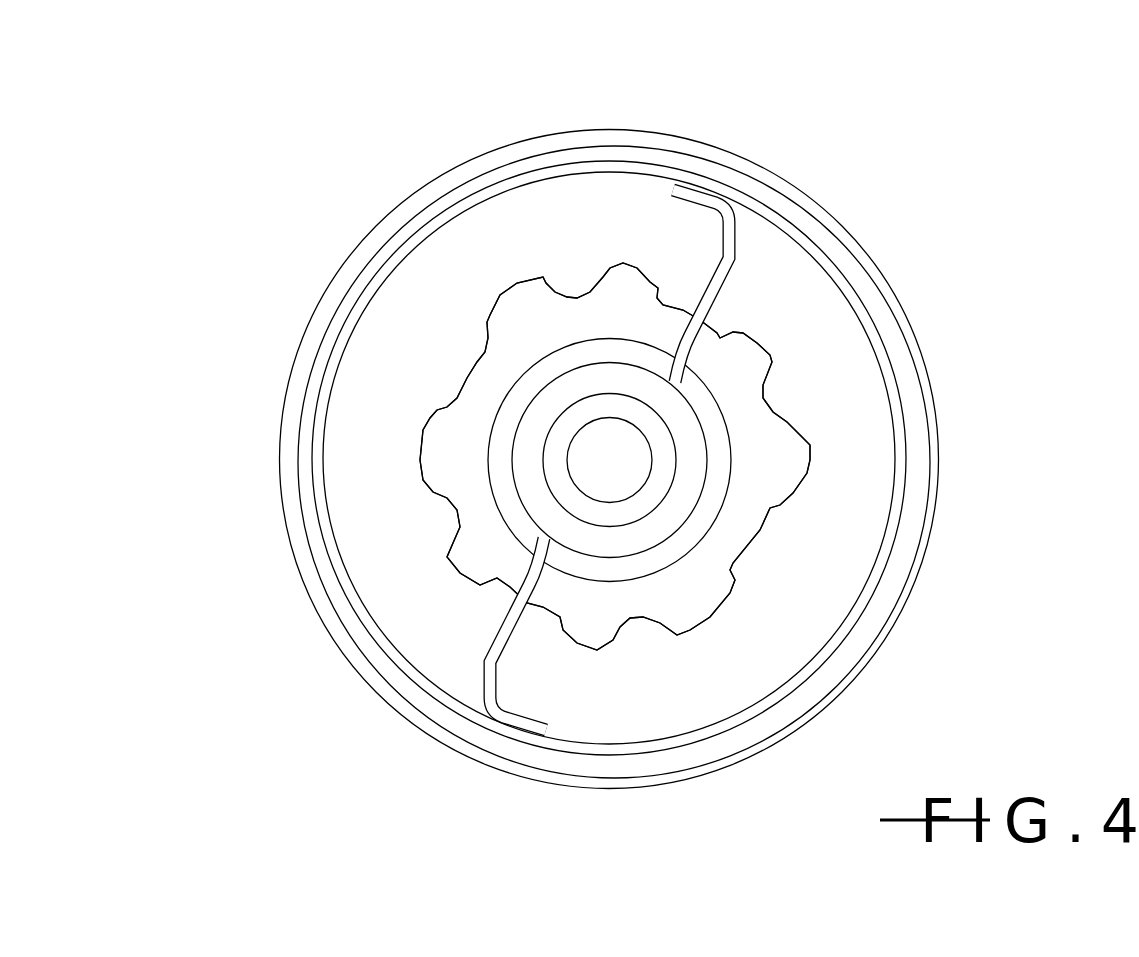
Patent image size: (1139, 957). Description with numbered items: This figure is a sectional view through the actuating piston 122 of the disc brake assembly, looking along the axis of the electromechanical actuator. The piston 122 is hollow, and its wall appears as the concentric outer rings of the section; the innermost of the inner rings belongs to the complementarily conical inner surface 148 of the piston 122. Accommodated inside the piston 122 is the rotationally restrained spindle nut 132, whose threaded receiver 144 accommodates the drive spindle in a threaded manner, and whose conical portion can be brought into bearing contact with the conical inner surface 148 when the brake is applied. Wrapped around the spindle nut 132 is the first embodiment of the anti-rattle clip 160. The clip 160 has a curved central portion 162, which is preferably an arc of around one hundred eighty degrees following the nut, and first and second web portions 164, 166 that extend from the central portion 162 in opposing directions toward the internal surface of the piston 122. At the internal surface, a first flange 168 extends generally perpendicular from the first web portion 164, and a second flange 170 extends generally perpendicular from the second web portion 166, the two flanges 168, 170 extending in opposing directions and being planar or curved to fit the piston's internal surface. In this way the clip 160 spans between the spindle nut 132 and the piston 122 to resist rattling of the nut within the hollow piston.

The actuating piston 122 is at (832, 210).
The spindle nut 132 is at (503, 495).
The threaded receiver 144 is at (443, 443).
The conical inner surface 148 is at (413, 330).
The anti-rattle clip 160 is at (767, 448).
The central portion 162 is at (703, 532).
The first web portion 164 is at (716, 305).
The second web portion 166 is at (507, 622).
The first flange 168 is at (698, 188).
The second flange 170 is at (528, 735).